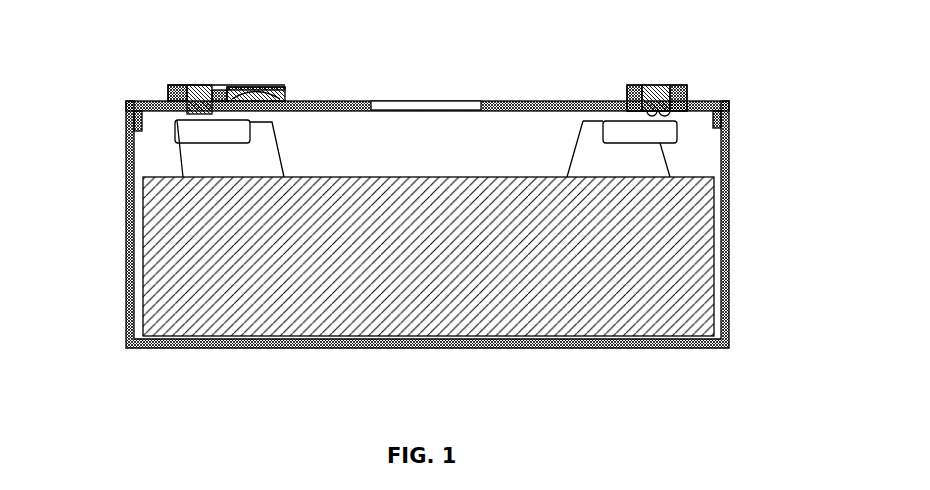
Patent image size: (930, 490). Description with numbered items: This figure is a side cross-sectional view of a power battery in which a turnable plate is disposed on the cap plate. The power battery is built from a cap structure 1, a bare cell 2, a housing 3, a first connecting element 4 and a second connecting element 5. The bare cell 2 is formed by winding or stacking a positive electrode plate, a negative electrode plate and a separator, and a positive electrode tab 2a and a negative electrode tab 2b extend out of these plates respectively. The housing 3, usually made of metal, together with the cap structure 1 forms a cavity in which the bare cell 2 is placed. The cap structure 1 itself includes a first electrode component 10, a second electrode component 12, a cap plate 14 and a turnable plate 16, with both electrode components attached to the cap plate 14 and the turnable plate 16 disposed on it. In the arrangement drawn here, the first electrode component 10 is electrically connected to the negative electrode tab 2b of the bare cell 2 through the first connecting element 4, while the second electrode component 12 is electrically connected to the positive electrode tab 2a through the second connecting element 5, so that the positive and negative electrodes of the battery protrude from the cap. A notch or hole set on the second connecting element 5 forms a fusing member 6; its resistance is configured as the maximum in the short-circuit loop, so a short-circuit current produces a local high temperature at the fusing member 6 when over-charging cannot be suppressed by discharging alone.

The cap structure 1 is at (500, 97).
The bare cell 2 is at (195, 247).
The positive electrode tab 2a is at (667, 173).
The negative electrode tab 2b is at (188, 172).
The housing 3 is at (734, 353).
The first connecting element 4 is at (193, 132).
The second connecting element 5 is at (665, 133).
The fusing member 6 is at (688, 102).
The first electrode component 10 is at (195, 85).
The second electrode component 12 is at (657, 86).
The cap plate 14 is at (362, 101).
The turnable plate 16 is at (252, 87).